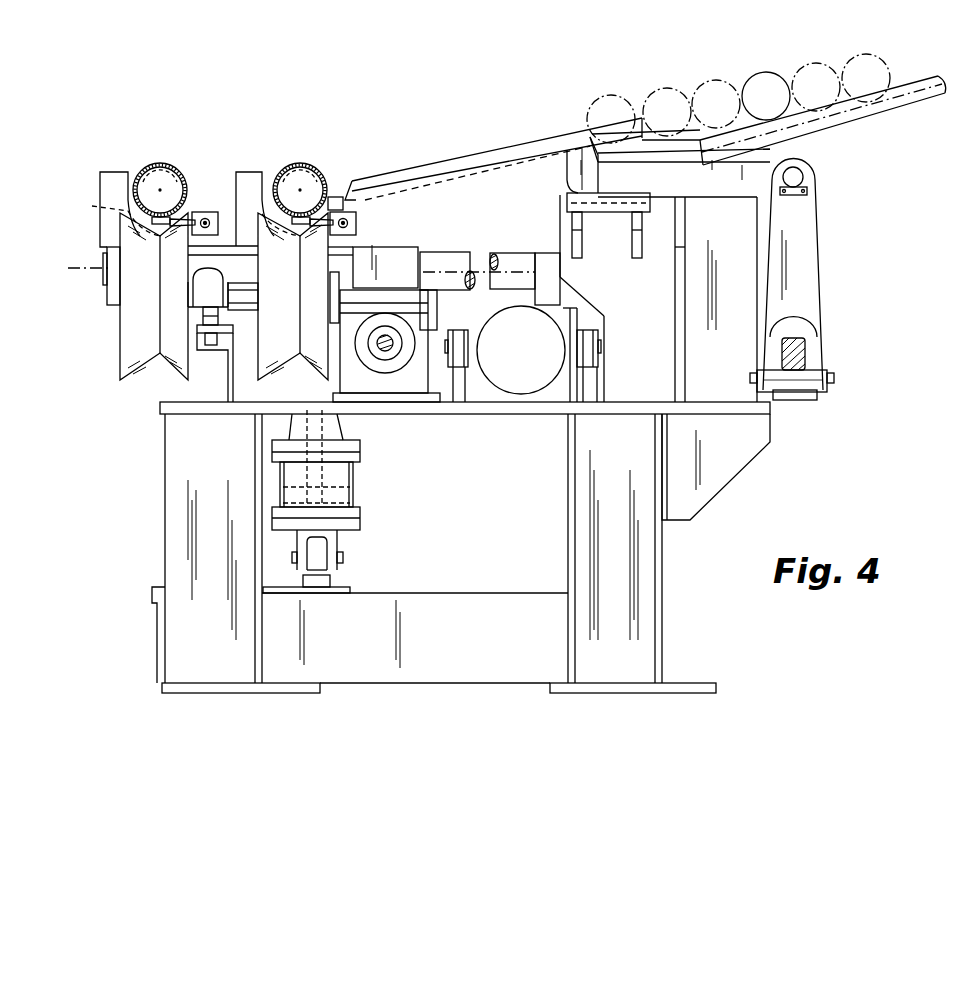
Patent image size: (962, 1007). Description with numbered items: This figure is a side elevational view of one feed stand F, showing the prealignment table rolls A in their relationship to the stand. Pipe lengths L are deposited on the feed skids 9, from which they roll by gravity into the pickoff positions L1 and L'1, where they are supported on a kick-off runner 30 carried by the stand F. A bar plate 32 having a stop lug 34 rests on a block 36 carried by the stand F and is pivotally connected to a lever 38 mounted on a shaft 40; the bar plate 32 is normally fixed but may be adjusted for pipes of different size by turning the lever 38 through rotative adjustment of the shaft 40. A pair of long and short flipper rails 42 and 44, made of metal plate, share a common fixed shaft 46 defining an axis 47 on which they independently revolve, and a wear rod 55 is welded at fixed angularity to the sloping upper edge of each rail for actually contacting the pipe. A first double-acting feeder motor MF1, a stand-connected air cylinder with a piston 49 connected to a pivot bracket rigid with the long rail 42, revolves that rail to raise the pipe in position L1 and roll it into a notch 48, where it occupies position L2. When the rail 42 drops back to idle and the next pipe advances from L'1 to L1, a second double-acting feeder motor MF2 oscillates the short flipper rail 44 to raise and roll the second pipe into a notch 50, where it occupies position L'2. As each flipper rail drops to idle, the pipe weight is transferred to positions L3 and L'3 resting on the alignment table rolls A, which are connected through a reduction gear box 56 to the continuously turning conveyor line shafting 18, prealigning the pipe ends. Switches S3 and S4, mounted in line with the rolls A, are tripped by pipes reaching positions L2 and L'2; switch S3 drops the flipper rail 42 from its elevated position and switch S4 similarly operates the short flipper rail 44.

The prealignment table rolls A is at (140, 369).
The pipe position in notch 48 L2 is at (163, 172).
The pipe position in notch 50 L'2 is at (300, 175).
The notch 48 is at (135, 203).
The notch 50 is at (272, 172).
The pipe position on alignment table rolls L3 is at (113, 214).
The pipe position on alignment table rolls L'3 is at (281, 236).
The switch S3 is at (218, 223).
The switch S4 is at (356, 223).
The wear rod 55 is at (477, 152).
The long flipper rail 42 is at (393, 176).
The short flipper rail 44 is at (340, 200).
The stop lug 34 is at (572, 156).
The block 36 is at (626, 206).
The bar plate 32 is at (668, 192).
The kick-off runner 30 is at (702, 157).
The feed skid 9 is at (914, 80).
The first pickoff position L1 is at (611, 101).
The second pickoff position L'1 is at (667, 96).
The pipe length L is at (791, 81).
The lever 38 is at (813, 235).
The shaft 40 is at (808, 349).
The reduction gear box 56 is at (410, 253).
The axis 47 is at (484, 254).
The common fixed shaft 46 is at (522, 253).
The conveyor line shafting 18 is at (392, 351).
The second double-acting feeder motor MF2 is at (551, 337).
The first double-acting feeder motor MF1 is at (353, 473).
The piston 49 is at (353, 500).
The feed stand F is at (733, 470).